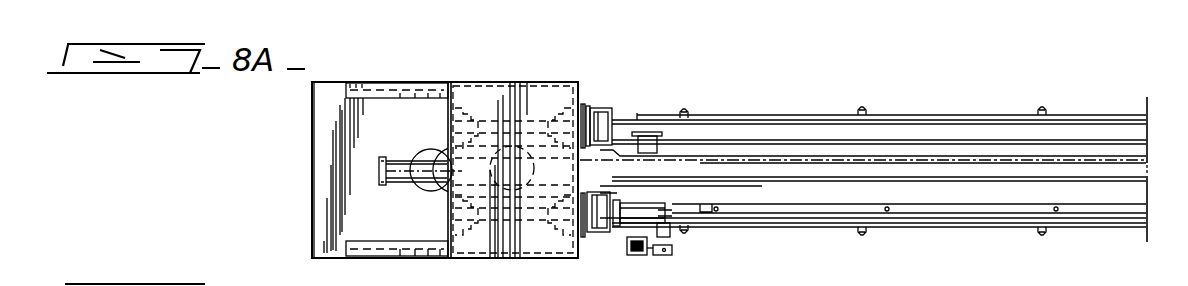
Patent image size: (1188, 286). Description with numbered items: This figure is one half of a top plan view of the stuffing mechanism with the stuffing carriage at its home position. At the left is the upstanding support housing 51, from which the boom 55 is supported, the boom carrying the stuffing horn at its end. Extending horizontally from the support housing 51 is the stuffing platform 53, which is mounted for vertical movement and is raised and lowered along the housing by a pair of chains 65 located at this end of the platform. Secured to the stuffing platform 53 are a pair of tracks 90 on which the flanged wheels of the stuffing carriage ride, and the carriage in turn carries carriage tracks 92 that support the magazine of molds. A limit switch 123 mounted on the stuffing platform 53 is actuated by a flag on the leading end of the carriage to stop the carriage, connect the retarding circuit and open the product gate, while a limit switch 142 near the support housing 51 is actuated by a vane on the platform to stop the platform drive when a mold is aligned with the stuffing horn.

The support housing 51 is at (478, 261).
The stuffing platform 53 is at (937, 116).
The boom 55 is at (866, 172).
The chains 65 is at (586, 105).
The tracks 90 is at (975, 121).
The carriage tracks 92 is at (834, 280).
The limit switch 123 is at (648, 142).
The limit switch 142 is at (633, 255).